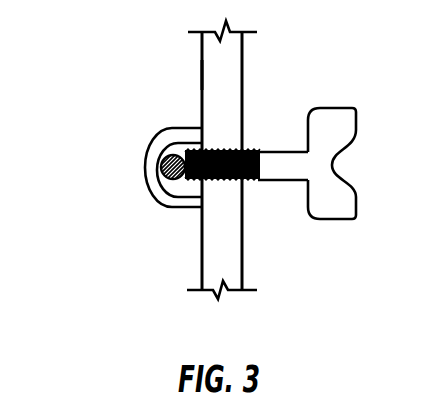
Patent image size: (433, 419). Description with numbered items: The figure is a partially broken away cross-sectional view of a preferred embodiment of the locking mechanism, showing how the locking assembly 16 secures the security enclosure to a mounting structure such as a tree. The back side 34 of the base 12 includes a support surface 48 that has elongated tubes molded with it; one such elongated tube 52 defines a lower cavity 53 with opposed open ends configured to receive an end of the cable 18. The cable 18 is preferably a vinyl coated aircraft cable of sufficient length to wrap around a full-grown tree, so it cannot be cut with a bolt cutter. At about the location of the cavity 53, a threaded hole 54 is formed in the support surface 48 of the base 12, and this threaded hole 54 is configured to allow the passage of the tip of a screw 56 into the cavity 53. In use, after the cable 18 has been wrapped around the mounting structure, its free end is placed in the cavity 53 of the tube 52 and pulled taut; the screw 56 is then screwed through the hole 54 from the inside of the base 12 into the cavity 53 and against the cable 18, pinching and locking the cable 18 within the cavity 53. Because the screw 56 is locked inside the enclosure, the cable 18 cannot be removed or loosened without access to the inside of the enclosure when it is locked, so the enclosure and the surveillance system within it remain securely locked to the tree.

The base 12 is at (243, 56).
The locking assembly 16 is at (333, 118).
The cable 18 is at (163, 142).
The back side 34 is at (111, 76).
The support surface 48 is at (202, 75).
The elongated tube 52 is at (167, 198).
The cavity 53 is at (191, 188).
The threaded hole 54 is at (251, 138).
The screw 56 is at (343, 107).